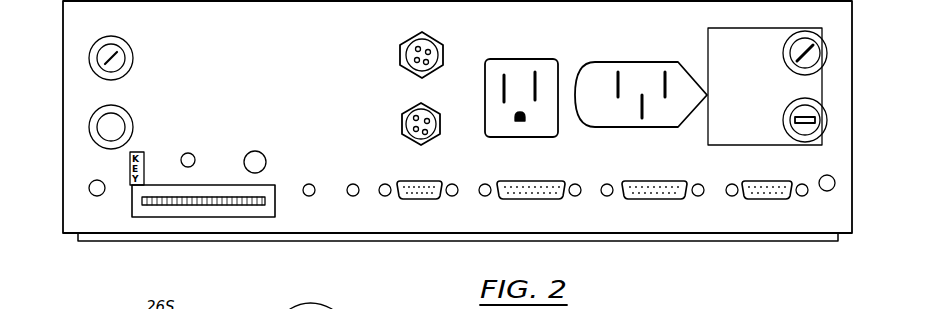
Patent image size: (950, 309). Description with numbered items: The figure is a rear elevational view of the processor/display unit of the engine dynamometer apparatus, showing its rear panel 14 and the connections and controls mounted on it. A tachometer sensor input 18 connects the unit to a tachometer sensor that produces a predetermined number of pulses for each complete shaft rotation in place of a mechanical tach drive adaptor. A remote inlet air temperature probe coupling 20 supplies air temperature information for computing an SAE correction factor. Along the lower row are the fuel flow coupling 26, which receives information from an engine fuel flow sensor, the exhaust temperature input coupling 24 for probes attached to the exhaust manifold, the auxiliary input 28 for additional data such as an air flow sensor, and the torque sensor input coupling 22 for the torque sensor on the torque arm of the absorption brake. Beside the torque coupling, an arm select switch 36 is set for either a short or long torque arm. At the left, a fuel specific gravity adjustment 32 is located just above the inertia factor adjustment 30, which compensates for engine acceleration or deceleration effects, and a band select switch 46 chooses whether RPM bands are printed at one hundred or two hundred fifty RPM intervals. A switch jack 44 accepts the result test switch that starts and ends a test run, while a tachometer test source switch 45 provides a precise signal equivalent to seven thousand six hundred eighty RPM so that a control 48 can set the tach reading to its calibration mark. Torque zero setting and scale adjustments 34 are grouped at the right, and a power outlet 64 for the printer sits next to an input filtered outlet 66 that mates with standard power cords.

The rear panel 14 is at (70, 221).
The tachometer sensor input 18 is at (400, 50).
The remote inlet air temperature probe coupling 20 is at (405, 110).
The torque sensor input coupling 22 is at (745, 199).
The exhaust temperature input coupling 24 is at (563, 200).
The fuel flow coupling 26 is at (440, 200).
The auxiliary input 28 is at (683, 200).
The inertia factor adjustment 30 is at (133, 125).
The fuel specific gravity adjustment 32 is at (133, 58).
The torque zero setting and scale adjustments 34 is at (840, 70).
The arm select switch 36 is at (835, 183).
The switch jack 44 is at (196, 162).
The tachometer test source switch 45 is at (351, 196).
The band select switch 46 is at (89, 187).
The tachometer calibration control 48 is at (266, 163).
The power outlet 64 is at (493, 130).
The input filtered outlet 66 is at (605, 128).